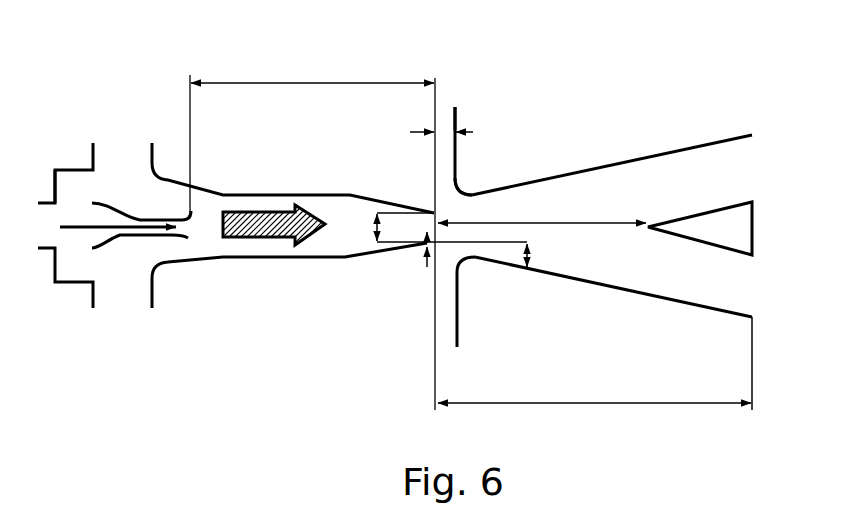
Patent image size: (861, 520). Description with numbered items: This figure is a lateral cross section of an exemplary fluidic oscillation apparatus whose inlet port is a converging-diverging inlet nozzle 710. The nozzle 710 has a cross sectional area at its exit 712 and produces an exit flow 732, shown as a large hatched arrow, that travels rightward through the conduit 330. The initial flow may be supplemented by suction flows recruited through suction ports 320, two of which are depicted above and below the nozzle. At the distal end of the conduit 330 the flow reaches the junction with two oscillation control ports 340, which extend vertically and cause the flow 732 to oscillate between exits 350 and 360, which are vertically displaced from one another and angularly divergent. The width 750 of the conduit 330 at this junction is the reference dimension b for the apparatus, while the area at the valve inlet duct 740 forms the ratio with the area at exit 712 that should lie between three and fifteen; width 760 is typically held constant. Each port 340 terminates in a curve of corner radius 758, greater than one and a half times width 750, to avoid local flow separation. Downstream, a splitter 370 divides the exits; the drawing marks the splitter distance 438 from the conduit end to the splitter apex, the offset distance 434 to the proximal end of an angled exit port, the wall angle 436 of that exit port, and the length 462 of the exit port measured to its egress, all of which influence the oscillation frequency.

The suction port 320 is at (120, 150).
The conduit 330 is at (279, 74).
The oscillation control port 340 is at (447, 111).
The exit 350 is at (761, 160).
The exit 360 is at (756, 290).
The splitter 370 is at (705, 223).
The offset distance 434 is at (421, 250).
The wall angle 436 is at (532, 258).
The splitter distance 438 is at (578, 214).
The length of exit port 462 is at (583, 396).
The converging-diverging inlet nozzle 710 is at (120, 247).
The exit of inlet nozzle 712 is at (198, 236).
The exit flow 732 is at (257, 216).
The valve inlet duct 740 is at (441, 203).
The width of conduit 750 is at (366, 228).
The corner radius 758 is at (467, 187).
The width 760 is at (463, 119).